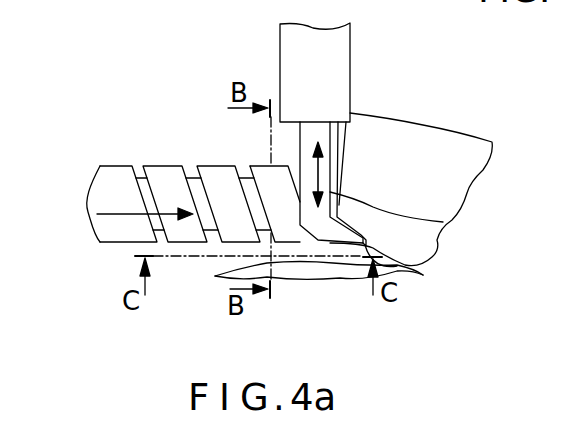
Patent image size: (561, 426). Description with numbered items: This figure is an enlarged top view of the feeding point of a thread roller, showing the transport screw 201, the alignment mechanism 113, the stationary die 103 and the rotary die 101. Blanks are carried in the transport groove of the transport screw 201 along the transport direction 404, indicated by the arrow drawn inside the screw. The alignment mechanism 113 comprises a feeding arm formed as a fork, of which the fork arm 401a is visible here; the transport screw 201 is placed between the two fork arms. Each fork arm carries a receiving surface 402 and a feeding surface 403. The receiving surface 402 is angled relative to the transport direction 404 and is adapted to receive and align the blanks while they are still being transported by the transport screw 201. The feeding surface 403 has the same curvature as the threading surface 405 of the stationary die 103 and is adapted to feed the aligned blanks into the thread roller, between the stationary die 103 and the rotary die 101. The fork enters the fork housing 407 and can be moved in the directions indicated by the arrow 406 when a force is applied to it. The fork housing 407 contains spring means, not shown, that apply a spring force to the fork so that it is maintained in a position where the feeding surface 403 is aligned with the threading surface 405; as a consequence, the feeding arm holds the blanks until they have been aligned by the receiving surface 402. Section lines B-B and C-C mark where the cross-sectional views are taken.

The fork housing 407 is at (293, 37).
The alignment mechanism 113 is at (258, 83).
The transport screw 201 is at (170, 170).
The transport direction 404 is at (100, 214).
The fork arm 401a is at (327, 173).
The stationary die 103 is at (445, 152).
The arrow indicating fork movement directions 406 is at (443, 222).
The threading surface 405 is at (440, 258).
The receiving surface 402 is at (318, 242).
The feeding surface 403 is at (338, 246).
The rotary die 101 is at (393, 270).